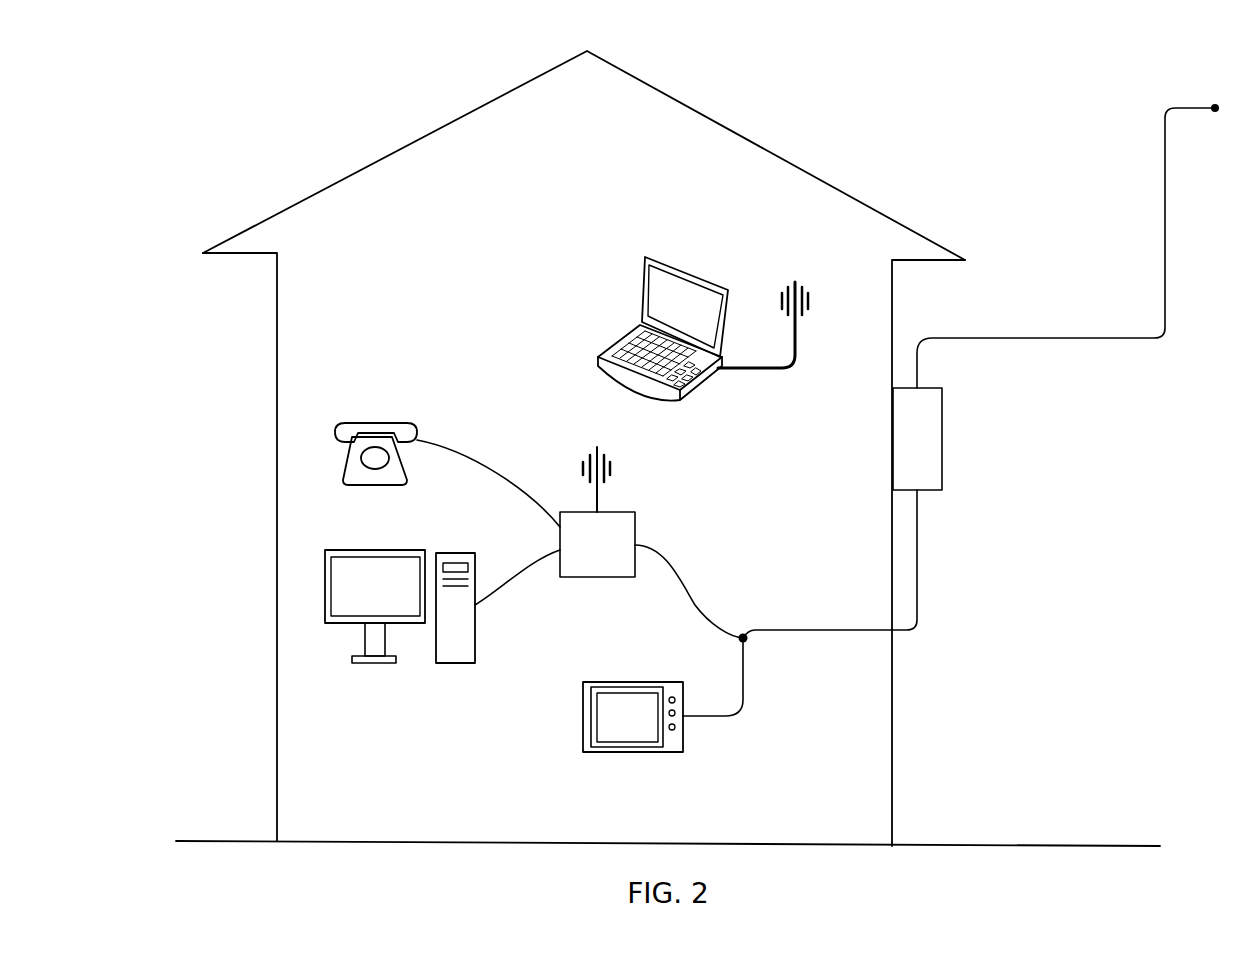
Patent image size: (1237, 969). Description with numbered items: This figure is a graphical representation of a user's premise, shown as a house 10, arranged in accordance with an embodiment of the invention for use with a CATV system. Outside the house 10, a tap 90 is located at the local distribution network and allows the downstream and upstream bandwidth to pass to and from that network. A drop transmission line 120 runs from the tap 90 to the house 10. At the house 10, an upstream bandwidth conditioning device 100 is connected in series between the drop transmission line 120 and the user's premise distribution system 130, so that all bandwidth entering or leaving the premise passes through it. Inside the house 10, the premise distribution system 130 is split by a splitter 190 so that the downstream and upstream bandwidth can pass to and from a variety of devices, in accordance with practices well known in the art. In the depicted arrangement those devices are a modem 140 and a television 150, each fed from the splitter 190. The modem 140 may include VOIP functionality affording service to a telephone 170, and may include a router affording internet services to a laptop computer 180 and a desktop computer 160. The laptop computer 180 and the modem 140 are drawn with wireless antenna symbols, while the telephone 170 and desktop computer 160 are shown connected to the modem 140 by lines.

The house 10 is at (895, 102).
The tap 90 is at (1215, 106).
The upstream bandwidth conditioning device 100 is at (943, 427).
The drop transmission line 120 is at (1163, 237).
The premise distribution system 130 is at (846, 698).
The modem 140 is at (620, 512).
The television 150 is at (632, 752).
The desktop computer 160 is at (372, 663).
The telephone 170 is at (372, 420).
The laptop computer 180 is at (667, 260).
The splitter 190 is at (748, 639).